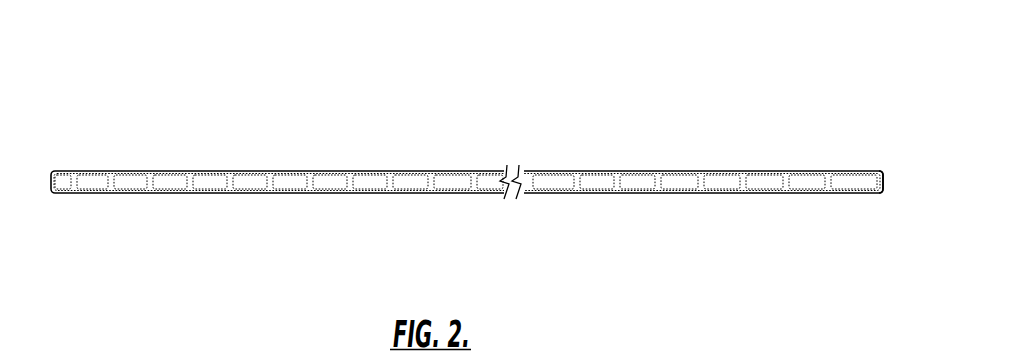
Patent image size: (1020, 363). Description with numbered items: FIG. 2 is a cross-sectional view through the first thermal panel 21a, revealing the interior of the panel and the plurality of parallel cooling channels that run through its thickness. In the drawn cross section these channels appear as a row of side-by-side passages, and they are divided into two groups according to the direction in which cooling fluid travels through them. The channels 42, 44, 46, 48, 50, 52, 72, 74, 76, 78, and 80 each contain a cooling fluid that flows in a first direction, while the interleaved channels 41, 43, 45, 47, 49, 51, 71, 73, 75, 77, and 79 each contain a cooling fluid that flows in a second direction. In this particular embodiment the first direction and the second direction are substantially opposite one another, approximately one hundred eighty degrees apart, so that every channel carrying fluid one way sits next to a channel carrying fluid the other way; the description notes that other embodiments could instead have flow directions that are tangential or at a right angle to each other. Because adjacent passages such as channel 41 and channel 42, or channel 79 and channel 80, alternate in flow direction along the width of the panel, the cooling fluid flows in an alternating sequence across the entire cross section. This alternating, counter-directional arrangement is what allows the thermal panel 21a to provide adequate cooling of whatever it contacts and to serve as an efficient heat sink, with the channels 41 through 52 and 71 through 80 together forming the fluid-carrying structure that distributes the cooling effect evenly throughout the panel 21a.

The thermal panel 21a is at (750, 82).
The channel 41 is at (63, 187).
The channel 42 is at (90, 171).
The channel 43 is at (128, 188).
The channel 44 is at (165, 171).
The channel 45 is at (208, 188).
The channel 46 is at (253, 171).
The channel 47 is at (290, 188).
The channel 48 is at (330, 171).
The channel 49 is at (371, 188).
The channel 50 is at (413, 171).
The channel 51 is at (453, 188).
The channel 52 is at (492, 171).
The channel 71 is at (522, 188).
The channel 72 is at (558, 171).
The channel 73 is at (595, 188).
The channel 74 is at (638, 171).
The channel 75 is at (680, 188).
The channel 76 is at (730, 171).
The channel 77 is at (768, 188).
The channel 78 is at (815, 171).
The channel 79 is at (842, 188).
The channel 80 is at (872, 171).